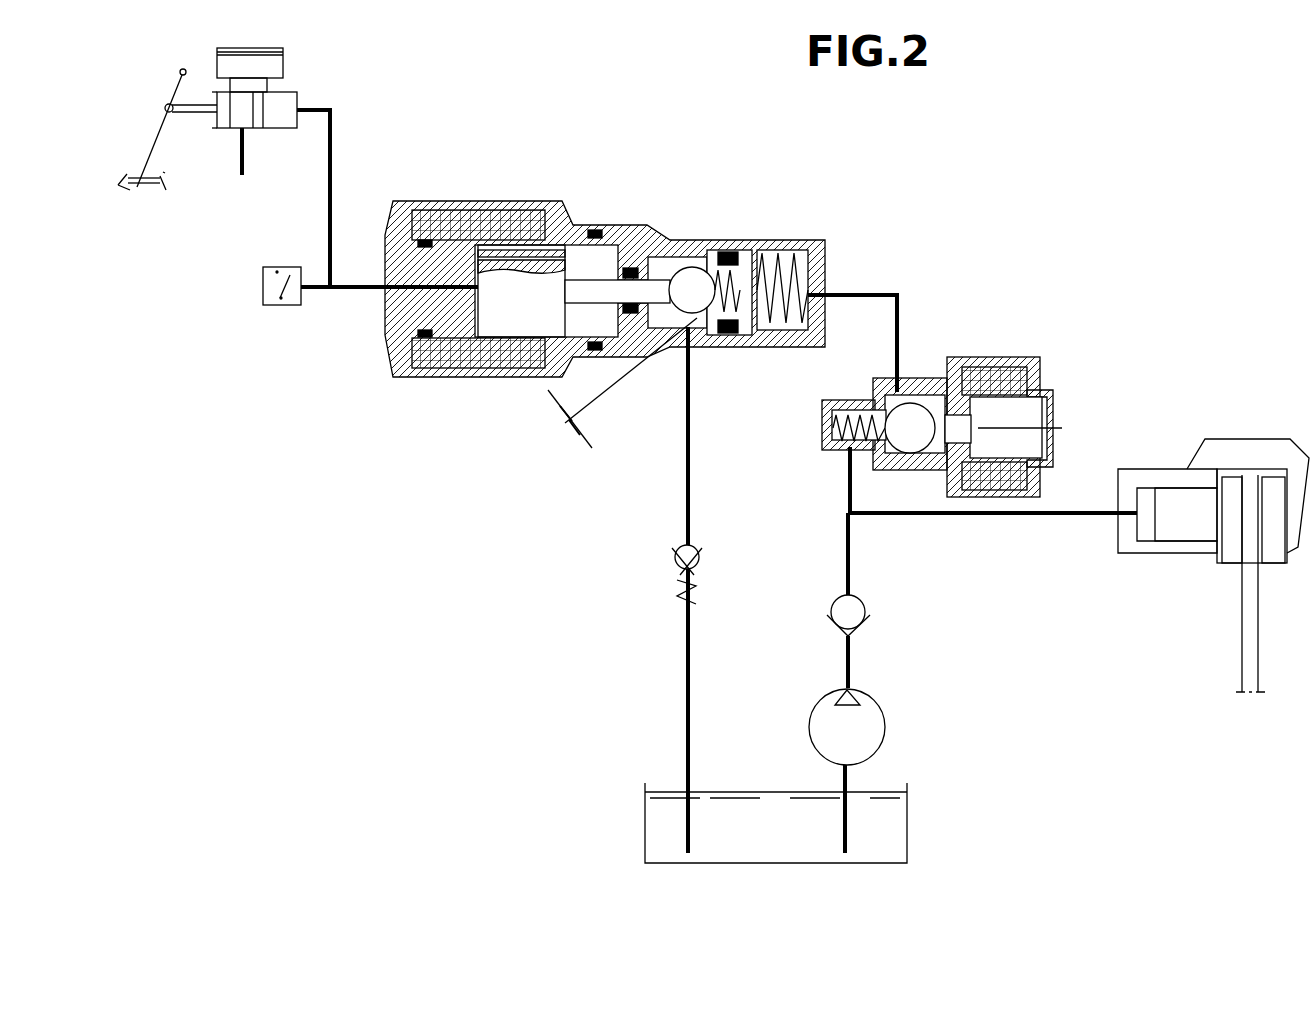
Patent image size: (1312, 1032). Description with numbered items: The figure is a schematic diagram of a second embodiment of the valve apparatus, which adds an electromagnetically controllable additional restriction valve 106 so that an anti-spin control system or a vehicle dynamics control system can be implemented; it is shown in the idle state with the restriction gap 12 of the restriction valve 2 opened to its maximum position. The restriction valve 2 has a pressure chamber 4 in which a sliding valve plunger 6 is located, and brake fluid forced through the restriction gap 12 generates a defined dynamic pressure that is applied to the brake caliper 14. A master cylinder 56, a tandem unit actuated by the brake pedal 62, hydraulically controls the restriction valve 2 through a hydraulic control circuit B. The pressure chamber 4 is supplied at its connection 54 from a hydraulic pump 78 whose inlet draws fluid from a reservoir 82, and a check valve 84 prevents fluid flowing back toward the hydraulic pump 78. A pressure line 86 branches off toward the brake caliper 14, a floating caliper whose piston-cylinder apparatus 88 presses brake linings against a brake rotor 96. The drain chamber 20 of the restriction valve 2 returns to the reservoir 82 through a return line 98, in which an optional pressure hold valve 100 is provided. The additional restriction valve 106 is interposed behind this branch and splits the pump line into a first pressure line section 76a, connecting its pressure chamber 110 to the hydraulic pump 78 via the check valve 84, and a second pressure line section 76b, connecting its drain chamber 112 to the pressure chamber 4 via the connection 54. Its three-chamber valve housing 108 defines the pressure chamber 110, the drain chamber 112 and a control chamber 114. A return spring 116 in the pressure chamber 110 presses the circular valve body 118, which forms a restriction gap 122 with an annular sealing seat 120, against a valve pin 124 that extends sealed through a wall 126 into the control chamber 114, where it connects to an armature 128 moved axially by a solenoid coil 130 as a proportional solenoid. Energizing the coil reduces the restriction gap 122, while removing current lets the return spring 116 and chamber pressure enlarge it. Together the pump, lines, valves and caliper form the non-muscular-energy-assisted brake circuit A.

The restriction valve 2 is at (582, 210).
The pressure chamber 4 is at (778, 250).
The valve plunger 6 is at (747, 330).
The restriction gap 12 is at (567, 423).
The brake caliper 14 is at (1272, 437).
The drain chamber 20 is at (662, 256).
The connection 54 is at (818, 284).
The master cylinder 56 is at (297, 84).
The brake pedal 62 is at (163, 132).
The first pressure line section 76a is at (847, 552).
The second pressure line section 76b is at (897, 292).
The hydraulic pump 78 is at (873, 722).
The reservoir 82 is at (897, 820).
The check valve 84 is at (826, 623).
The pressure line 86 is at (1080, 516).
The piston-cylinder apparatus 88 is at (1180, 486).
The brake rotor 96 is at (1258, 618).
The return line 98 is at (684, 492).
The pressure hold valve 100 is at (668, 566).
The additional restriction valve 106 is at (1044, 357).
The valve housing 108 is at (1042, 388).
The pressure chamber 110 is at (842, 438).
The drain chamber 112 is at (877, 390).
The control chamber 114 is at (967, 397).
The return spring 116 is at (832, 428).
The valve body 118 is at (910, 428).
The annular sealing seat 120 is at (888, 468).
The restriction gap 122 is at (883, 411).
The valve pin 124 is at (950, 434).
The wall 126 is at (958, 456).
The armature 128 is at (1016, 427).
The solenoid coil 130 is at (1000, 484).
The non-muscular-energy-assisted brake circuit A is at (998, 563).
The hydraulic control circuit B is at (293, 207).